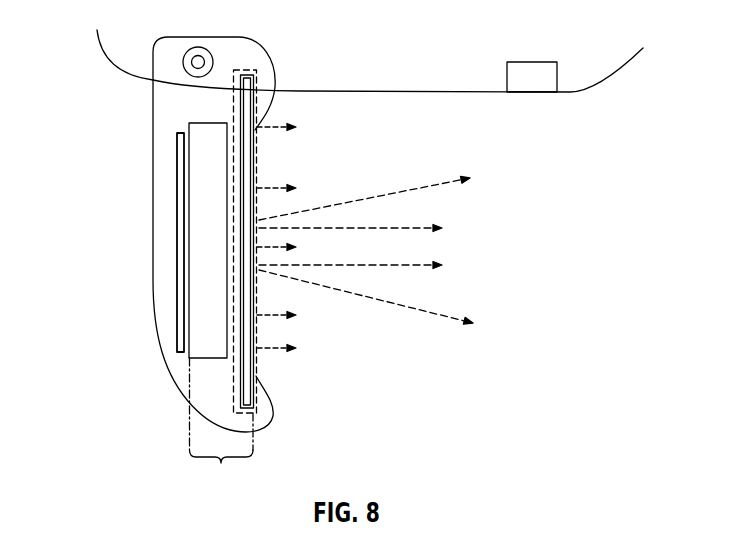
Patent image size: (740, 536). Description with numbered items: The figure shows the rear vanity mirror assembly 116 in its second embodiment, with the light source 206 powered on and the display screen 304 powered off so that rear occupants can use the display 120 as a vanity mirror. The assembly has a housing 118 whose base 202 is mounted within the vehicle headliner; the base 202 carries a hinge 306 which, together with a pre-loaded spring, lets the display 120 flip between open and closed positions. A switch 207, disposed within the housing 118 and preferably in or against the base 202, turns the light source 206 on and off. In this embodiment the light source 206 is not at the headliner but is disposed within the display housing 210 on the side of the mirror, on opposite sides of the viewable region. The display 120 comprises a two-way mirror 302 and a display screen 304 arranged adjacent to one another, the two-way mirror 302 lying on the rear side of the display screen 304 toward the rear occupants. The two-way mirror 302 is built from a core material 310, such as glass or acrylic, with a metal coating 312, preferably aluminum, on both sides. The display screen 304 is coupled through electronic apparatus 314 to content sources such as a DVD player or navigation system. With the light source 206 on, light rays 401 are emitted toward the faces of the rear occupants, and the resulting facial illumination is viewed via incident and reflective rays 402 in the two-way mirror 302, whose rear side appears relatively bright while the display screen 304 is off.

The rear vanity mirror assembly 116 is at (361, 256).
The housing 118 is at (400, 72).
The base 202 is at (593, 88).
The switch 207 is at (547, 62).
The display housing 210 is at (154, 135).
The hinge 306 is at (183, 62).
The display 120 is at (214, 256).
The coating 312 is at (257, 148).
The light source 206 is at (255, 70).
The two-way mirror 302 is at (231, 112).
The core material 310 is at (240, 188).
The display screen 304 is at (207, 238).
The electronic apparatus 314 is at (180, 188).
The light rays 401 is at (268, 124).
The incident and reflective rays 402 is at (428, 185).